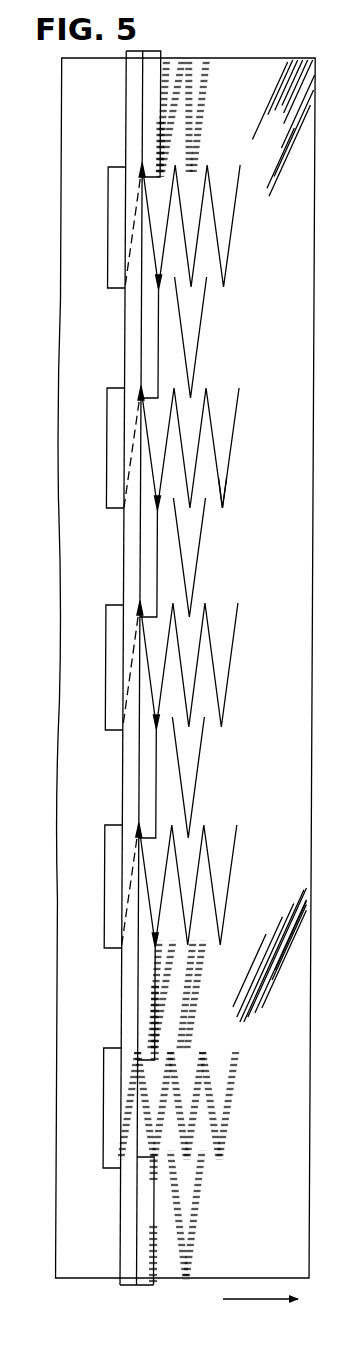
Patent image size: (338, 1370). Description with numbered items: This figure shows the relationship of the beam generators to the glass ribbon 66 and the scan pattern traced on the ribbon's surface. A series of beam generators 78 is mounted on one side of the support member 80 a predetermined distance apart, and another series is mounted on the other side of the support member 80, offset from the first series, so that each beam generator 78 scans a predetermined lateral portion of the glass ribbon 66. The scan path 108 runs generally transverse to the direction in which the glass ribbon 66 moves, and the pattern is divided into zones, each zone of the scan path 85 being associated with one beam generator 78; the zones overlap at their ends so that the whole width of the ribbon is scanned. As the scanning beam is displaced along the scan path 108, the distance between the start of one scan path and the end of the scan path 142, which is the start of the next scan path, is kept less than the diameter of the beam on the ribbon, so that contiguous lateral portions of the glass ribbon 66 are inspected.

The glass ribbon 66 is at (291, 1207).
The beam generator 78 is at (166, 48).
The support member 80 is at (116, 1218).
The zone of the scan path 85 is at (246, 228).
The scan path 108 is at (203, 351).
The end of the scan path 142 is at (228, 508).